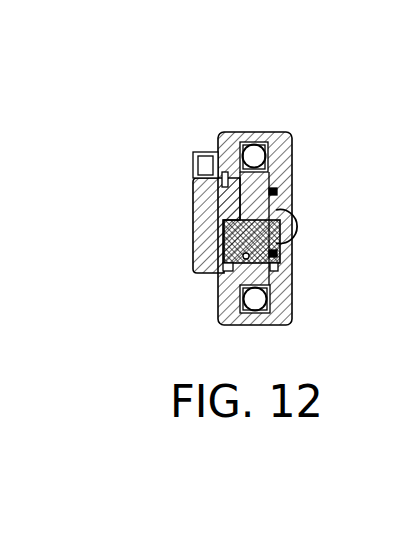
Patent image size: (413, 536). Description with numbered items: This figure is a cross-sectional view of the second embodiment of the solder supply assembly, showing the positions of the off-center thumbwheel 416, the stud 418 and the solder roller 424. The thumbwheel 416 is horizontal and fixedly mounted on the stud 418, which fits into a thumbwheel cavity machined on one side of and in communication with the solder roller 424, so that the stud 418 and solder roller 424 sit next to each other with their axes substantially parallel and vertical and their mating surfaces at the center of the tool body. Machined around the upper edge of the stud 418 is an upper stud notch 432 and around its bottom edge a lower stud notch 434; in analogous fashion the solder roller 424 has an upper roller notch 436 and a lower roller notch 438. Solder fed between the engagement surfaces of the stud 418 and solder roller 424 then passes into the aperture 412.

The aperture 412 is at (290, 210).
The thumbwheel 416 is at (200, 222).
The stud 418 is at (240, 215).
The solder roller 424 is at (290, 262).
The upper stud notch 432 is at (223, 192).
The lower stud notch 434 is at (292, 170).
The upper roller notch 436 is at (213, 274).
The lower roller notch 438 is at (290, 232).